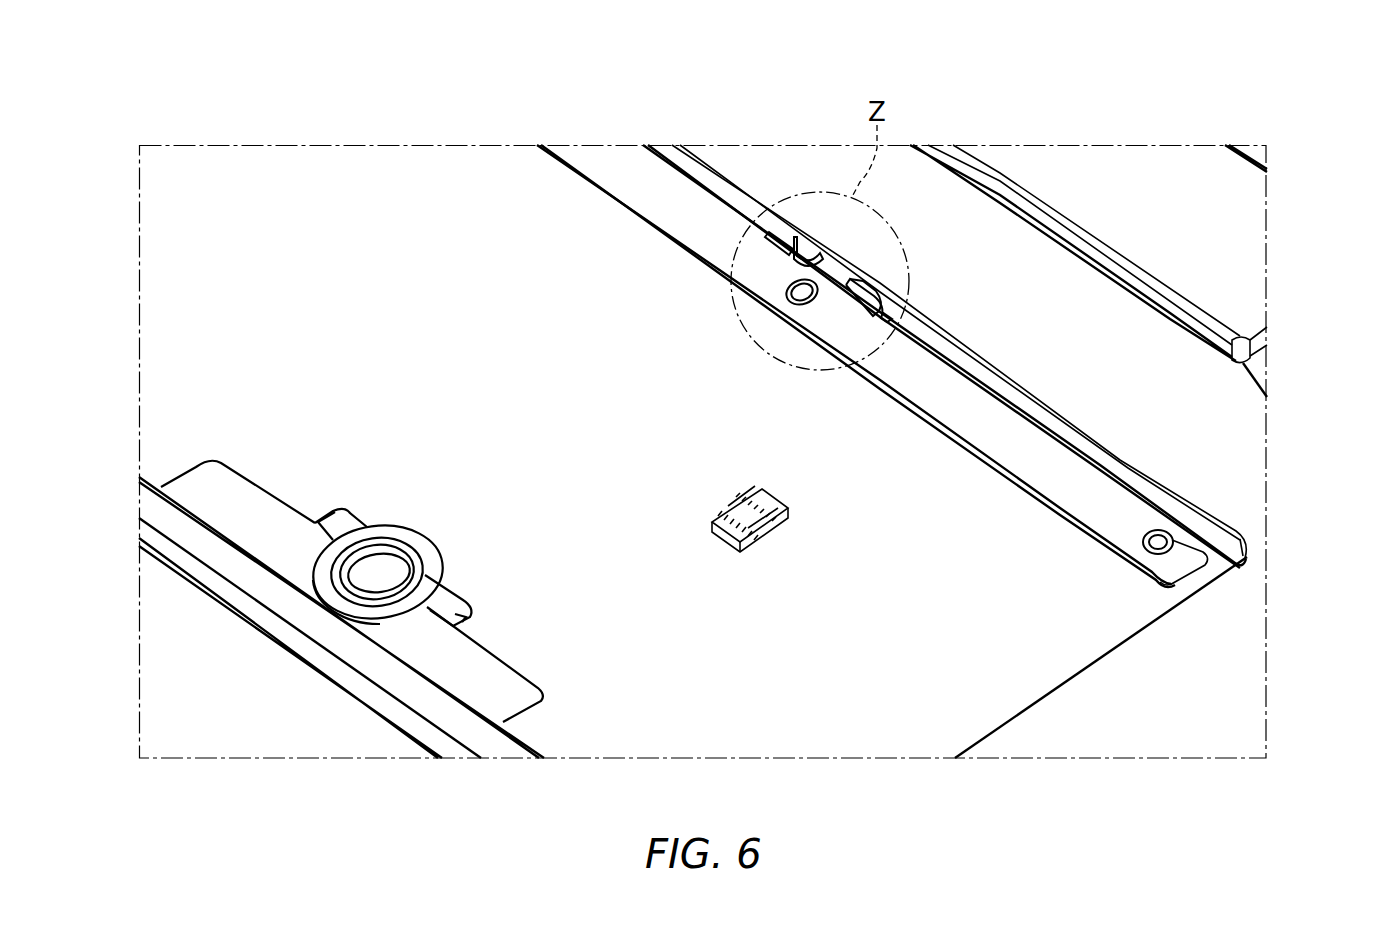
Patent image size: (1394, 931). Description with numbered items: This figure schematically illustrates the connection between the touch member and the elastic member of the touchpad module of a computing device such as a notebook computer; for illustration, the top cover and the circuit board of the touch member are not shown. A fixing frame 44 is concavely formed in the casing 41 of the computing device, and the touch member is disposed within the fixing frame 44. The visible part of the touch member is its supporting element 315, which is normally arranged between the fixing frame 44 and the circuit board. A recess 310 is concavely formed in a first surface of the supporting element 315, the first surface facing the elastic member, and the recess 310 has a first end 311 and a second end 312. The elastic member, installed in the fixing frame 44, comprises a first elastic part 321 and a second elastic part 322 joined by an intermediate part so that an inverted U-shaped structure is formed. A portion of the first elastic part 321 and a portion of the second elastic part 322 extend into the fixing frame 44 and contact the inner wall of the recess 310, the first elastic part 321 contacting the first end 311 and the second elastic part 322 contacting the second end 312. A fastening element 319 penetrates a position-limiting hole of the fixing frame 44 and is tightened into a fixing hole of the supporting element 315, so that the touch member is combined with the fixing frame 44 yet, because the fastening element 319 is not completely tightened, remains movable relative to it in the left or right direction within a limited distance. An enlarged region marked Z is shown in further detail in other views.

The recess 310 is at (815, 104).
The first end 311 is at (903, 307).
The second end 312 is at (755, 231).
The supporting element 315 is at (1140, 513).
The fastening element 319 is at (1168, 549).
The first elastic part 321 is at (845, 298).
The second elastic part 322 is at (786, 297).
The casing 41 is at (1248, 410).
The fixing frame 44 is at (896, 733).